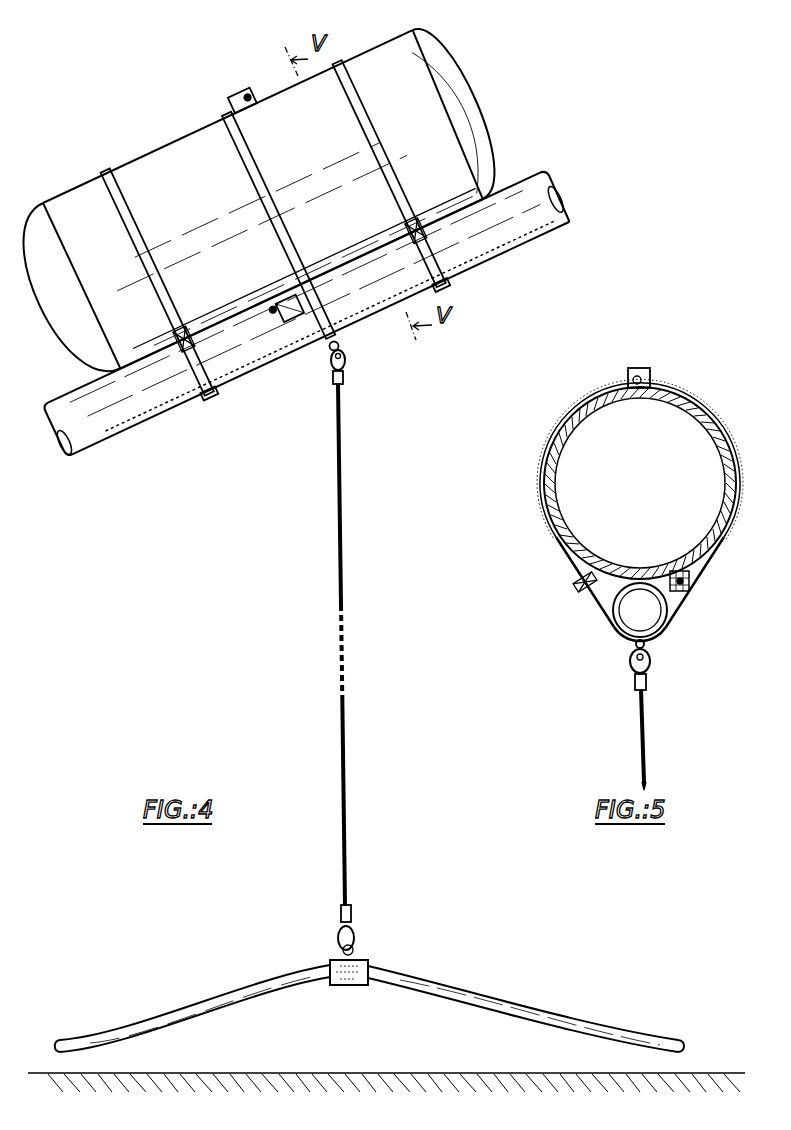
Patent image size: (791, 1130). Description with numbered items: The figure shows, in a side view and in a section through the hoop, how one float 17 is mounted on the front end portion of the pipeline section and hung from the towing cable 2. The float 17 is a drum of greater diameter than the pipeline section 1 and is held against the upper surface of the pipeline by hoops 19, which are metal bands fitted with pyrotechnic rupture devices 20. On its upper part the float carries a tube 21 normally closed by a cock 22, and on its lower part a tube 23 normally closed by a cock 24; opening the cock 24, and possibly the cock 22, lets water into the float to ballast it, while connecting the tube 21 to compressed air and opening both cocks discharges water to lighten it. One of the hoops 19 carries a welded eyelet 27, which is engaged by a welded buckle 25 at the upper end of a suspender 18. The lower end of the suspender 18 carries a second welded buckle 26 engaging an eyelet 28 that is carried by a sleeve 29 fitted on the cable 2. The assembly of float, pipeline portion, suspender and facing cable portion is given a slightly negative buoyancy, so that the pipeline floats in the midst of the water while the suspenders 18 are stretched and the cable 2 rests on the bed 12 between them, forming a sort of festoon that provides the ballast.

In FIG. 4, the pipeline 1 is at (122, 408).
In FIG. 5, the pipeline 1 is at (630, 607).
In FIG. 4, the towing cable 2 is at (457, 988).
In FIG. 4, the bed 12 is at (300, 1072).
In FIG. 5, the float 17 is at (697, 417).
In FIG. 4, the suspender 18 is at (339, 483).
In FIG. 5, the suspender 18 is at (648, 725).
In FIG. 4, the hoop 19 is at (110, 170).
In FIG. 5, the hoop 19 is at (707, 420).
In FIG. 4, the pyrotechnic rupture device 20 is at (184, 343).
In FIG. 5, the pyrotechnic rupture device 20 is at (590, 587).
In FIG. 4, the tube 21 is at (246, 85).
In FIG. 5, the tube 21 is at (634, 367).
In FIG. 4, the cock 22 is at (256, 86).
In FIG. 5, the cock 22 is at (645, 376).
In FIG. 4, the tube 23 is at (295, 314).
In FIG. 5, the tube 23 is at (690, 578).
In FIG. 4, the cock 24 is at (273, 312).
In FIG. 5, the cock 24 is at (687, 592).
In FIG. 4, the welded buckle 25 is at (346, 358).
In FIG. 5, the welded buckle 25 is at (653, 663).
In FIG. 4, the welded buckle 26 is at (354, 930).
In FIG. 4, the eyelet 27 is at (343, 342).
In FIG. 5, the eyelet 27 is at (635, 643).
In FIG. 4, the eyelet 28 is at (356, 956).
In FIG. 4, the sleeve 29 is at (348, 980).